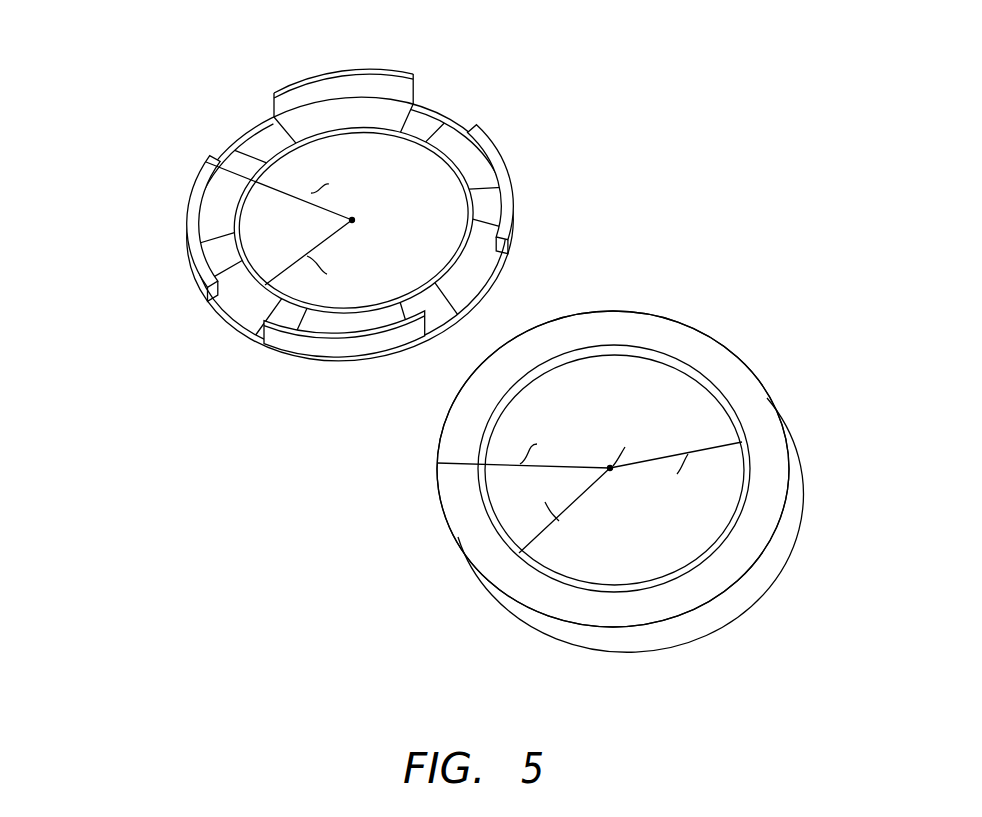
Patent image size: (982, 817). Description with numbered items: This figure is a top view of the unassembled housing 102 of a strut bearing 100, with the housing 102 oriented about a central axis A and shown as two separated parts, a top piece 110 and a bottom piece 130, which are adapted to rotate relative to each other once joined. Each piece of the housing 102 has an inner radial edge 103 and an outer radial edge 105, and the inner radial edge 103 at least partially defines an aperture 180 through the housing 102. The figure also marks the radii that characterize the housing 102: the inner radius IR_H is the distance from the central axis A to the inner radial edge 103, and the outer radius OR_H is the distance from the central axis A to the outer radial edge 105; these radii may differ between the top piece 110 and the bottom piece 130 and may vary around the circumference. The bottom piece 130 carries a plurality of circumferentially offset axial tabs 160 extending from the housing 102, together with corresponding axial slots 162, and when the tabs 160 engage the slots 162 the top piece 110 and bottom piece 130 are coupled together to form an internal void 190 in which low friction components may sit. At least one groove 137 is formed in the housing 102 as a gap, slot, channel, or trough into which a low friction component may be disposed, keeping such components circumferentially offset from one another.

The strut bearing 100 is at (163, 62).
The housing 102 is at (518, 240).
The inner radial edge 103 is at (243, 254).
The outer radial edge 105 is at (216, 163).
The top piece 110 is at (635, 469).
The bottom piece 130 is at (346, 210).
The groove 137 is at (213, 272).
The axial tab 160 is at (399, 72).
The axial slot 162 is at (250, 130).
The aperture 180 is at (589, 497).
The internal void 190 is at (473, 160).